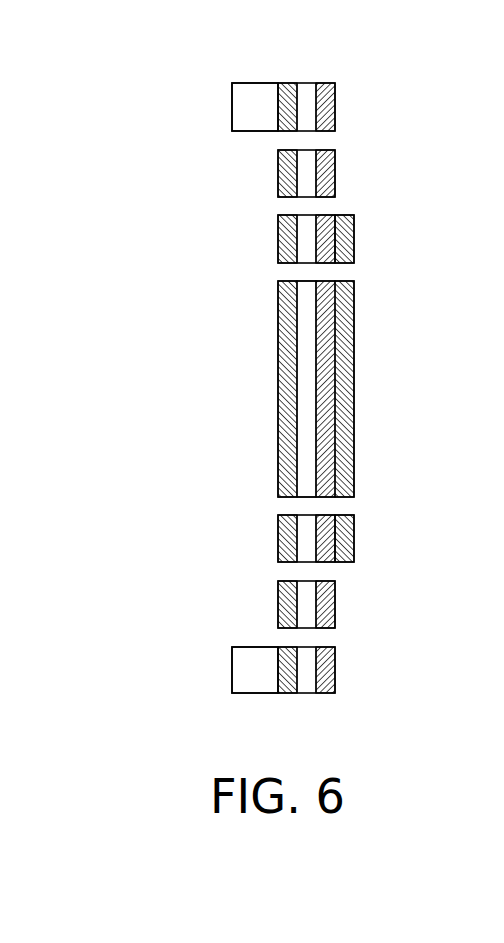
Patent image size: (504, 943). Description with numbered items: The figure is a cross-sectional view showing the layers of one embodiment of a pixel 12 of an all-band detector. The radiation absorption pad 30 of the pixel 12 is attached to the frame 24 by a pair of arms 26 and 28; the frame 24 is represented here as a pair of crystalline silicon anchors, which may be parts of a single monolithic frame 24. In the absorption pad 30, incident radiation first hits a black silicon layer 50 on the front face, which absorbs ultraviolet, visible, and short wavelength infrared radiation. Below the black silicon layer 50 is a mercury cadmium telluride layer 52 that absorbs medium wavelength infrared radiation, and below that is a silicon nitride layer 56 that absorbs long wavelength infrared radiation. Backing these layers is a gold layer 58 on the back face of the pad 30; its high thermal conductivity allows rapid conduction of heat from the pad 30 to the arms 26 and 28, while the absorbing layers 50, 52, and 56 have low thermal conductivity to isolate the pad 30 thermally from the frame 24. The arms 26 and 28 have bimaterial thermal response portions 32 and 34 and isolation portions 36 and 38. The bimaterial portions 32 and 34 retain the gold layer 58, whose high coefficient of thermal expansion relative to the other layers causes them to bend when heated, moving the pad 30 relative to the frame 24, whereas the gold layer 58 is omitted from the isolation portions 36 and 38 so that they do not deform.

The pixel 12 is at (360, 98).
The frame 24 is at (245, 112).
The arm 26 is at (371, 181).
The arm 28 is at (385, 614).
The radiation absorption pad 30 is at (321, 393).
The bimaterial thermal response portion 32 is at (363, 247).
The bimaterial thermal response portion 34 is at (363, 533).
The isolation portion 36 is at (343, 168).
The isolation portion 38 is at (347, 610).
The black silicon layer 50 is at (278, 367).
The mercury cadmium telluride layer 52 is at (307, 432).
The silicon nitride layer 56 is at (333, 458).
The gold layer 58 is at (355, 352).